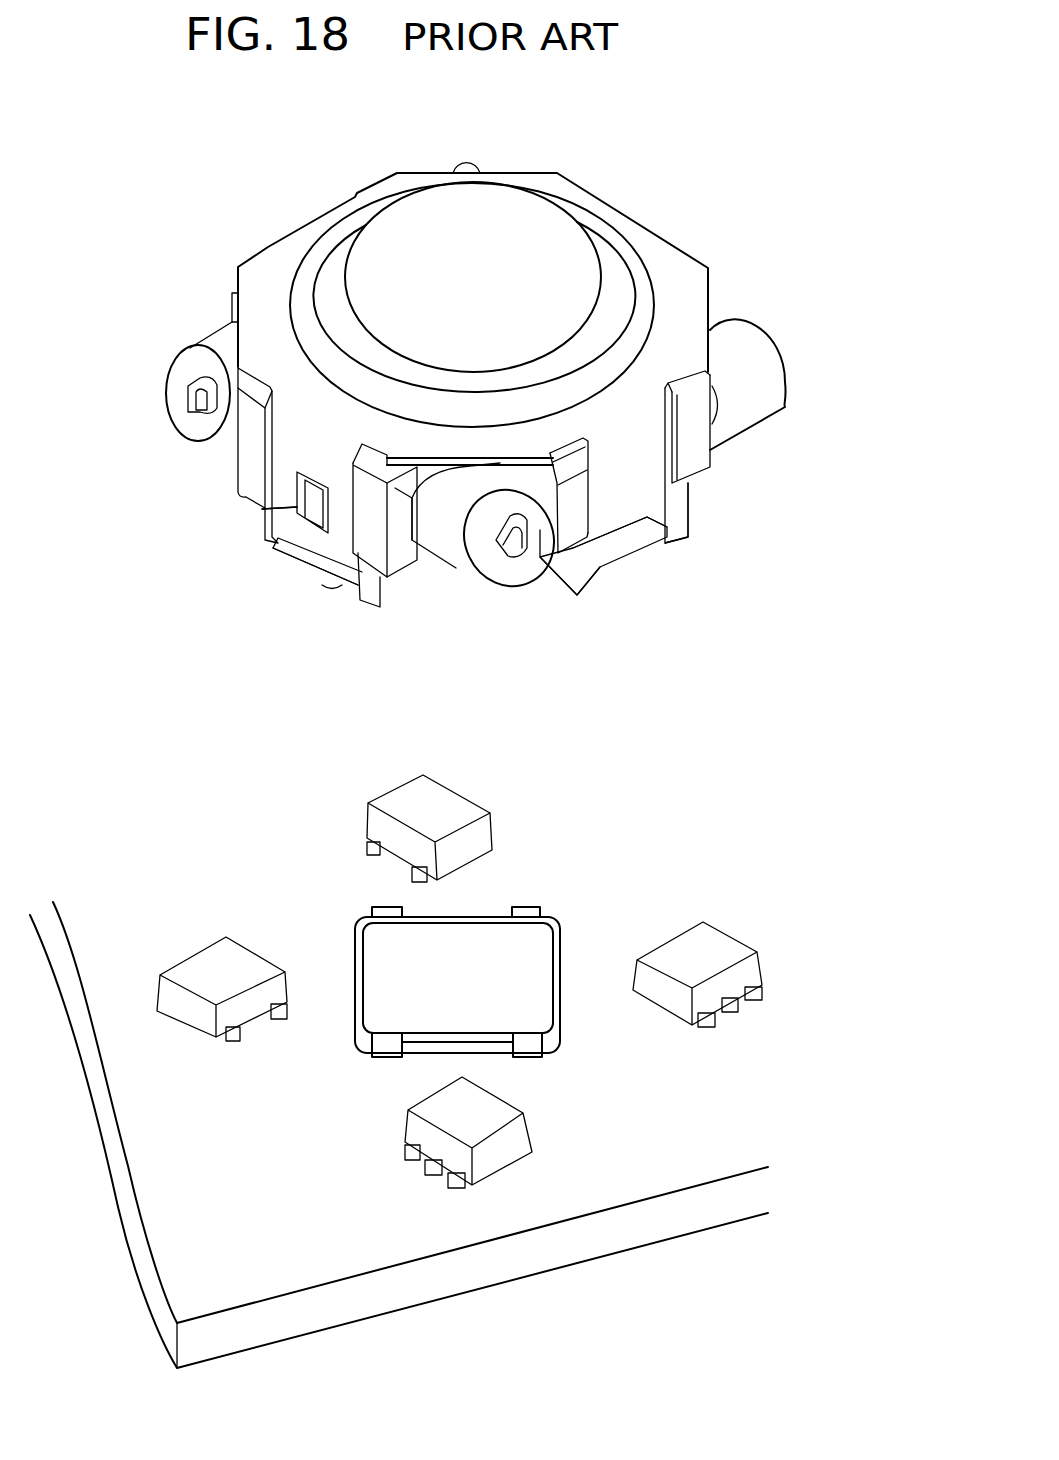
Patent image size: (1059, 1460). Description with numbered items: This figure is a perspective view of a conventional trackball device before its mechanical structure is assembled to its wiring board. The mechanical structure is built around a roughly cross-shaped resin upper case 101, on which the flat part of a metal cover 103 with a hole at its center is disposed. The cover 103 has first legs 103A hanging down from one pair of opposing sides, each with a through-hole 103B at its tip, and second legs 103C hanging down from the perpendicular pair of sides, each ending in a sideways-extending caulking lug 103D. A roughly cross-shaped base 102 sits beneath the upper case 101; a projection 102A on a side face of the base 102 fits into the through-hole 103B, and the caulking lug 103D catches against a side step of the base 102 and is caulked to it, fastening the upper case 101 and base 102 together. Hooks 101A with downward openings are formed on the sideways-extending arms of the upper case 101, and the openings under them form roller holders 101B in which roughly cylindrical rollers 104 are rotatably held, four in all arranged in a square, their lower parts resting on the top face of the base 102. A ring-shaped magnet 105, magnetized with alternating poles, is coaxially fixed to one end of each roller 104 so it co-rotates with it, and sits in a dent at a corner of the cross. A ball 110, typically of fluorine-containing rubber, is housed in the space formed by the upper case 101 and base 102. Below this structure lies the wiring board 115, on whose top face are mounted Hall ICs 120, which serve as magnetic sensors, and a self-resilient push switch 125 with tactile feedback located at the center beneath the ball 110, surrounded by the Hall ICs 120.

The upper case 101 is at (642, 315).
The hooks 101A is at (245, 457).
The roller holders 101B is at (413, 547).
The base 102 is at (683, 533).
The projection 102A is at (318, 508).
The cover 103 is at (268, 265).
The first legs 103A is at (273, 547).
The through-hole 103B is at (270, 508).
The second legs 103C is at (617, 517).
The caulking lug 103D is at (580, 550).
The roller 104 is at (185, 407).
The magnet 105 is at (213, 342).
The ball 110 is at (572, 252).
The wiring board 115 is at (417, 1240).
The Hall IC 120 is at (718, 942).
The push switch 125 is at (373, 942).